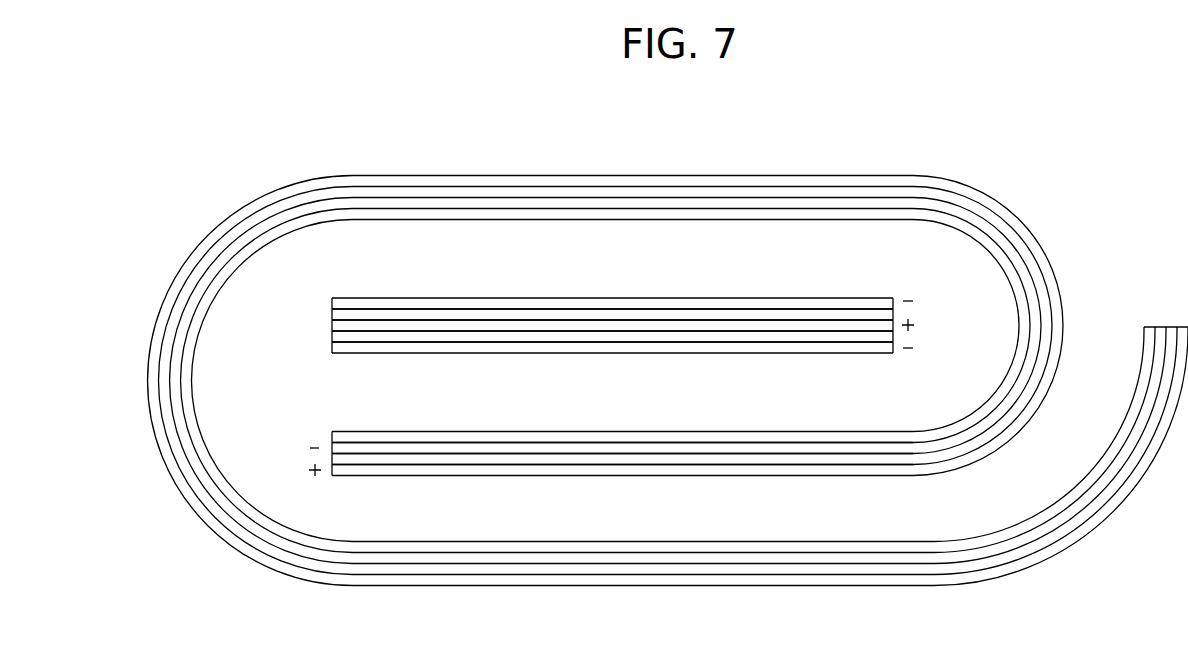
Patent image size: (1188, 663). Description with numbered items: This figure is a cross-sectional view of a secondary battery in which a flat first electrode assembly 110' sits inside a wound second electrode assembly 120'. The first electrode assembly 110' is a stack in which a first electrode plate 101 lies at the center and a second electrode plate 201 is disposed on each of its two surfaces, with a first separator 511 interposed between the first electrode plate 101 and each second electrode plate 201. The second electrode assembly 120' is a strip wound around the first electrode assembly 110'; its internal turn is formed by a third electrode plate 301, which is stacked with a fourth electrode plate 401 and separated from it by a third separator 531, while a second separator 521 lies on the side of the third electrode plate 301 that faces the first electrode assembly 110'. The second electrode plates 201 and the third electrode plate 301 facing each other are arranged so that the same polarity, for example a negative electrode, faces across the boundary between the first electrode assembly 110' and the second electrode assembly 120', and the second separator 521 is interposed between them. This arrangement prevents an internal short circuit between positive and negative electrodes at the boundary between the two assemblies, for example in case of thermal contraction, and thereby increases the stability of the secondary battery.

The first electrode assembly 110' is at (592, 255).
The second electrode assembly 120' is at (668, 381).
The first electrode plate 101 is at (336, 325).
The second electrode plate 201 is at (340, 302).
The first separator 511 is at (336, 305).
The third electrode plate 301 is at (408, 448).
The fourth electrode plate 401 is at (392, 470).
The second separator 521 is at (377, 438).
The third separator 531 is at (442, 458).